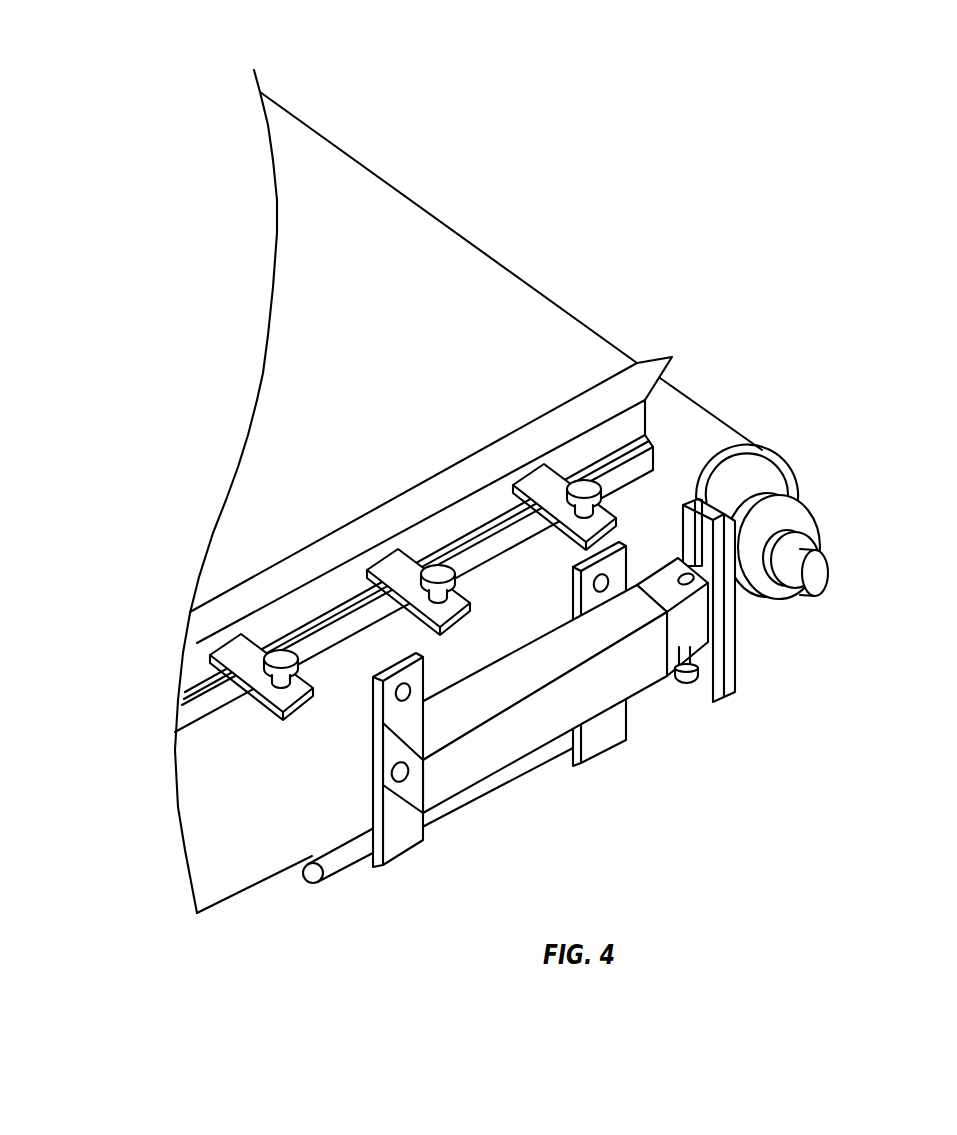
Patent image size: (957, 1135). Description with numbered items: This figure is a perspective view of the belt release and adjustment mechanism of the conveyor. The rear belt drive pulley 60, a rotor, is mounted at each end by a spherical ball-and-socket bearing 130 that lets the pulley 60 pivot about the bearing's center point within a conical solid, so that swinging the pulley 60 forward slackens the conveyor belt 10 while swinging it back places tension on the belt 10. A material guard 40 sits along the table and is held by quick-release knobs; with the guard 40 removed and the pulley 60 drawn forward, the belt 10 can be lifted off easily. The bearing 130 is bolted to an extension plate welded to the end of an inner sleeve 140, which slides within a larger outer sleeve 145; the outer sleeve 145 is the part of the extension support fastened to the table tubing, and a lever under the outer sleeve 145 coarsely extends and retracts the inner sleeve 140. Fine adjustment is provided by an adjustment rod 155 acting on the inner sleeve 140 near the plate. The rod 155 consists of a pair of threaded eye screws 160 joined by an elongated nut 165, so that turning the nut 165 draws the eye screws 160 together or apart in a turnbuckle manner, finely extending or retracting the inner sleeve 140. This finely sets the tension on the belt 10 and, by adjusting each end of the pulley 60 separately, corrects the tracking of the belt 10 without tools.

The conveyor belt 10 is at (358, 371).
The material guard 40 is at (623, 427).
The rear belt drive pulley 60 is at (773, 477).
The ball-and-socket bearing 130 is at (832, 547).
The inner sleeve 140 is at (702, 615).
The outer sleeve 145 is at (458, 773).
The adjustment rod 155 is at (686, 718).
The threaded eye screw 160 is at (694, 688).
The elongated nut 165 is at (668, 686).